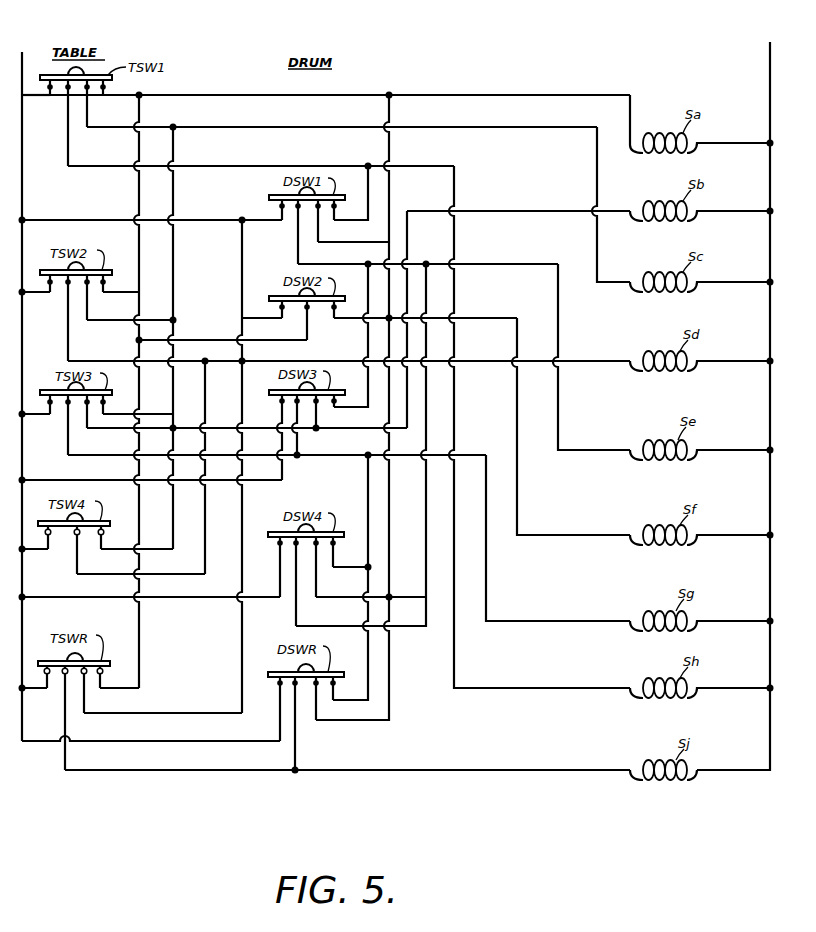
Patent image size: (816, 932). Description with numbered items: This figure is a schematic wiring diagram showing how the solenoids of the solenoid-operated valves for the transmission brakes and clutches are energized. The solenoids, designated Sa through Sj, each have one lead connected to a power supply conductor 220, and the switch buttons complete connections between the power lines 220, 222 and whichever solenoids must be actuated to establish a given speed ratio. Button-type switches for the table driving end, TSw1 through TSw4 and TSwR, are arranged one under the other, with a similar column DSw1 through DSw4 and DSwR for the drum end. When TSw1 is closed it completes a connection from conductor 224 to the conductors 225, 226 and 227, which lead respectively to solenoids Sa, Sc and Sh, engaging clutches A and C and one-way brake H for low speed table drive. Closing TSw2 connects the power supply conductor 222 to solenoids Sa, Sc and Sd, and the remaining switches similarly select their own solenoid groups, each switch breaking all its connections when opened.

The power supply conductor 220 is at (770, 73).
The power supply conductor 222 is at (22, 55).
The conductor 224 is at (43, 97).
The conductor 225 is at (190, 95).
The conductor 226 is at (238, 118).
The conductor 227 is at (209, 166).